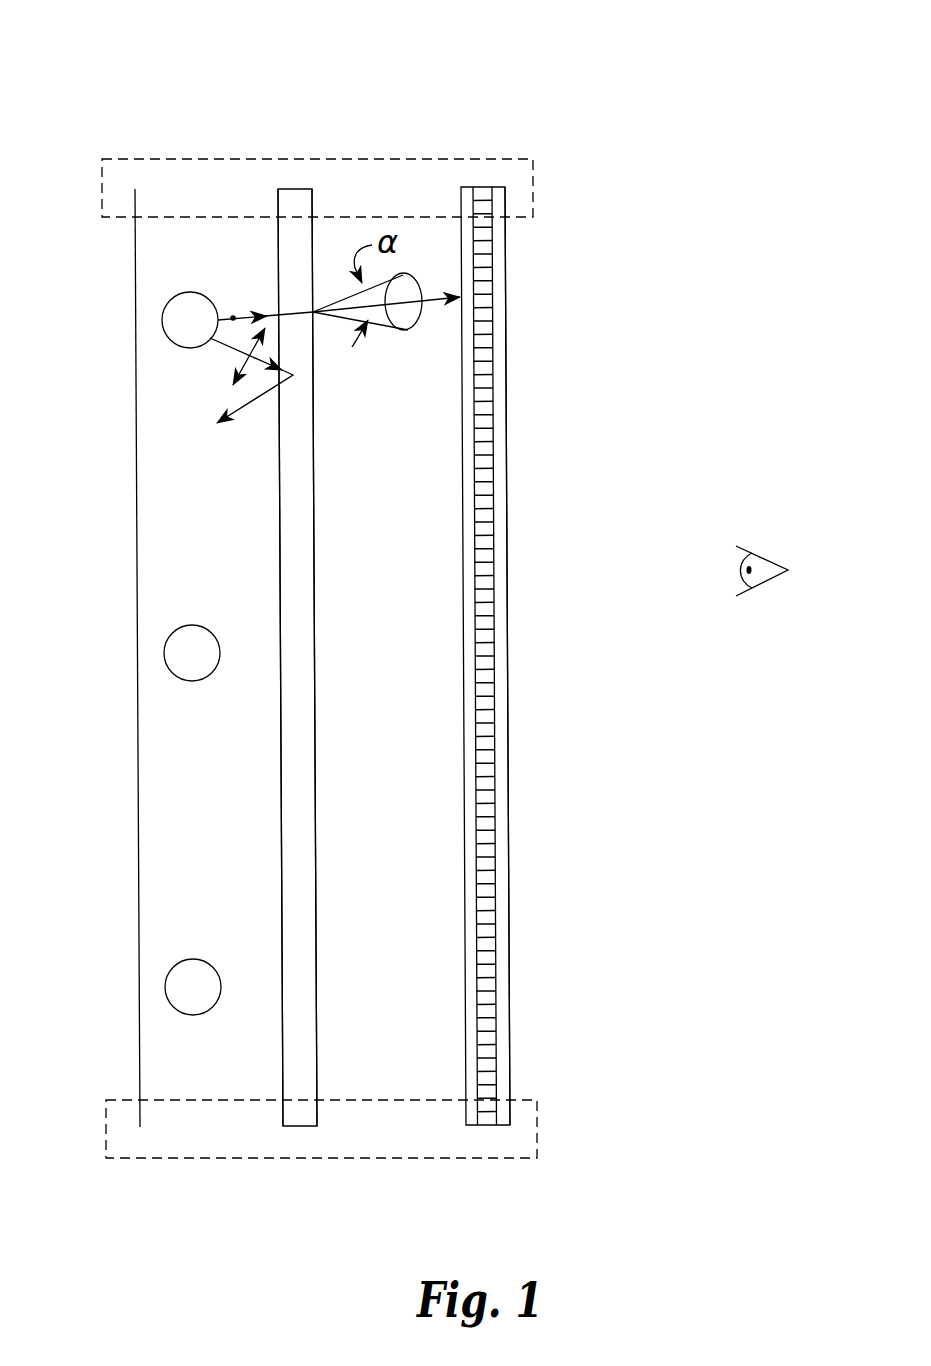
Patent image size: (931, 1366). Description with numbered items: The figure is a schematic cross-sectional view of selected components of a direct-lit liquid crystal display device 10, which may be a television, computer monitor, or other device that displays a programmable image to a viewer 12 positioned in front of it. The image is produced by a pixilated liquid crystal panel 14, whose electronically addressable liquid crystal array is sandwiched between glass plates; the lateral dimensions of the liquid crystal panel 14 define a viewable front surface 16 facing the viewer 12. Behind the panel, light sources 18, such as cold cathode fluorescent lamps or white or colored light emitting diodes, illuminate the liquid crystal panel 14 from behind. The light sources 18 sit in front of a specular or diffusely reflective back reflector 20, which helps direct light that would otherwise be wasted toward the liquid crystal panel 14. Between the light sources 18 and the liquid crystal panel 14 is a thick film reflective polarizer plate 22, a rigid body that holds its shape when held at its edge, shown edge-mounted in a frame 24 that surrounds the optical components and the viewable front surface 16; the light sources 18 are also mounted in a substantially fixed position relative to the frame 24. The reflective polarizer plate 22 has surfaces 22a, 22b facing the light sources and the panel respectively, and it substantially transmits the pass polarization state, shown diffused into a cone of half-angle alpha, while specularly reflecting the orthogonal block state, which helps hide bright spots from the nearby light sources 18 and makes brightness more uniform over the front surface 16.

The direct-lit liquid crystal display device 10 is at (484, 55).
The viewer 12 is at (768, 582).
The liquid crystal panel 14 is at (468, 1127).
The viewable front surface 16 is at (515, 1053).
The light sources 18 is at (176, 316).
The back reflector 20 is at (145, 912).
The thick film reflective polarizer plate 22 is at (296, 198).
The first surface of light redirecting film 22a is at (280, 1073).
The second surface of light redirecting film 22b is at (319, 1076).
The frame 24 is at (213, 170).